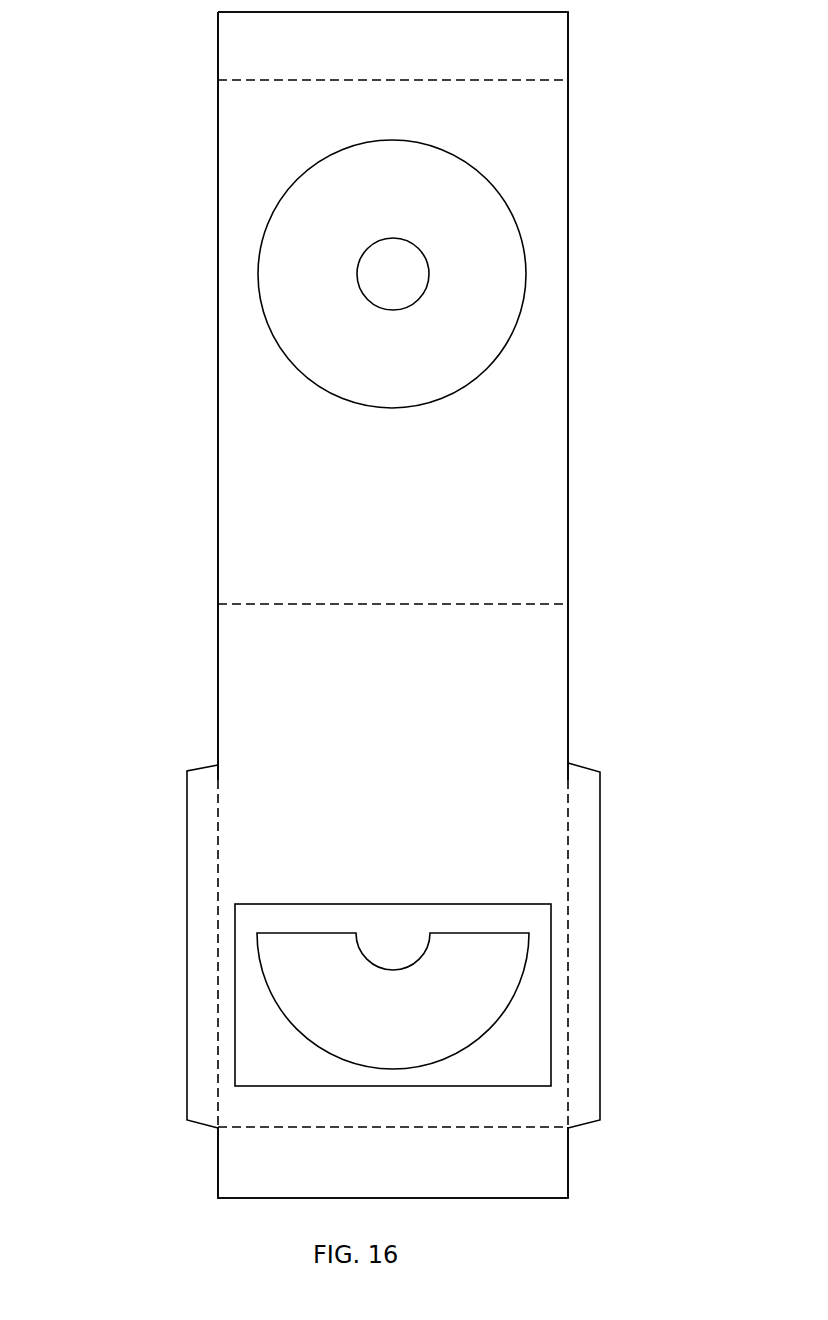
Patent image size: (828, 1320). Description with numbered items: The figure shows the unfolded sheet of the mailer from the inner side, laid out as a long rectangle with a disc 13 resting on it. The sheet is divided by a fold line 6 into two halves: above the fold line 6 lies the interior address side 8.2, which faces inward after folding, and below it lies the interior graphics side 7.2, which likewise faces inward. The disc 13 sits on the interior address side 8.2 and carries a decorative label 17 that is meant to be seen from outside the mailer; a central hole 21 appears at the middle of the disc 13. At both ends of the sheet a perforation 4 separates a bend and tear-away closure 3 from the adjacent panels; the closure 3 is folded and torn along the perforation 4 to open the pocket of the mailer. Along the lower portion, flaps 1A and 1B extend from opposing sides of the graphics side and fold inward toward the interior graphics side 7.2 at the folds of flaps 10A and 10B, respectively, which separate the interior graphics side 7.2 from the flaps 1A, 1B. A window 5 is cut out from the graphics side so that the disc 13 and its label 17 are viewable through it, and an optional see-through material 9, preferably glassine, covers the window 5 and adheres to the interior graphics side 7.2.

The bend & tear-away closure 3 is at (245, 30).
The perforation 4 is at (548, 80).
The fold line 6 is at (258, 605).
The interior address side 8.2 is at (403, 485).
The interior graphics side 7.2 is at (396, 713).
The disc 13 is at (523, 200).
The central hole 21 is at (408, 273).
The label 17 is at (434, 366).
The flap 1B is at (200, 786).
The flap 1A is at (593, 892).
The fold of flap 10B is at (220, 903).
The fold of flap 10A is at (568, 1010).
The see-through material 9 is at (237, 1043).
The window 5 is at (275, 992).